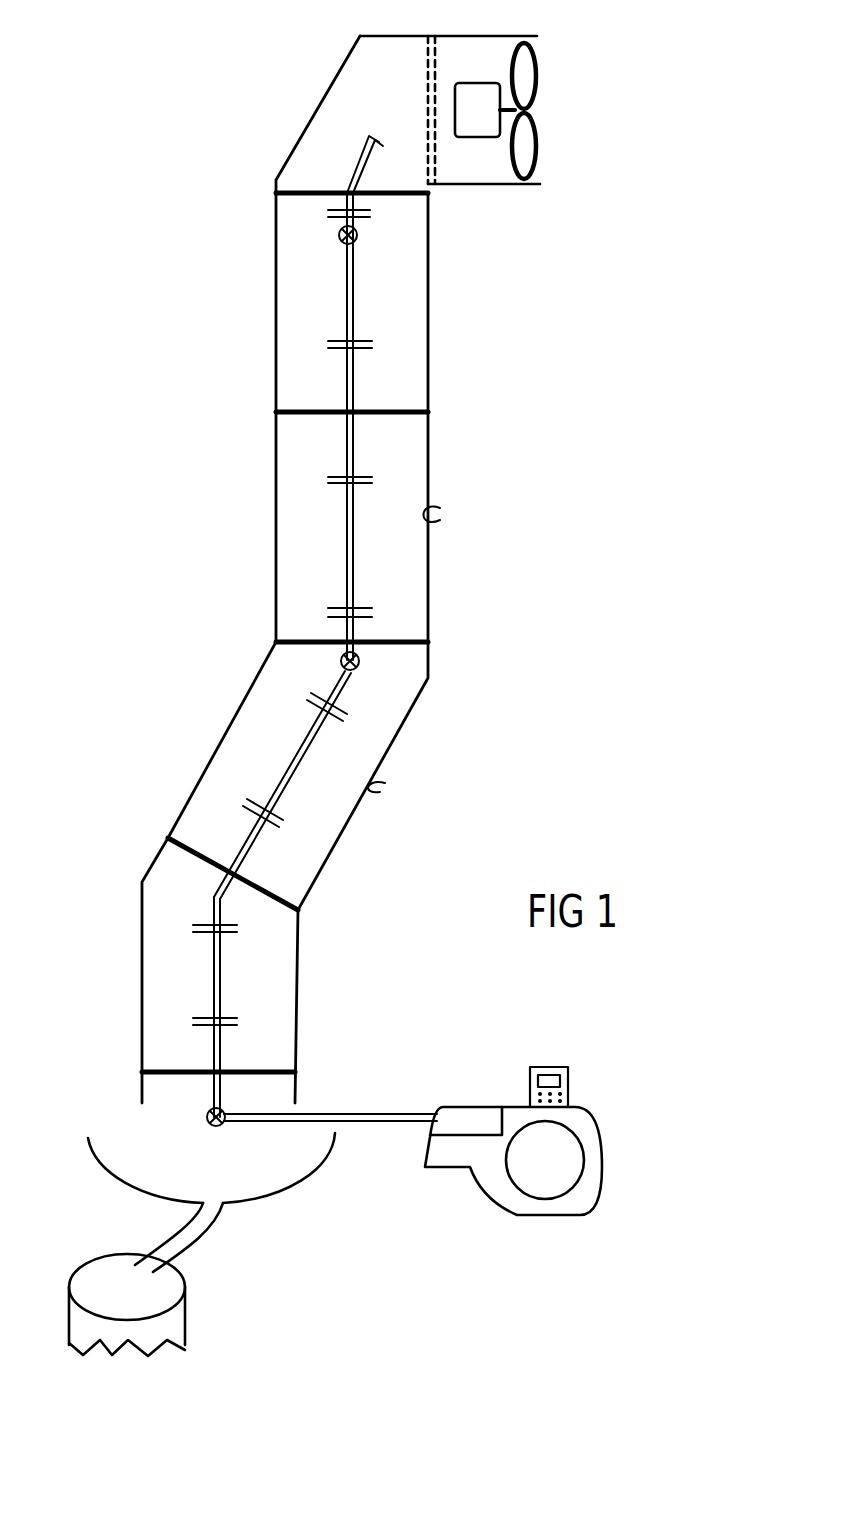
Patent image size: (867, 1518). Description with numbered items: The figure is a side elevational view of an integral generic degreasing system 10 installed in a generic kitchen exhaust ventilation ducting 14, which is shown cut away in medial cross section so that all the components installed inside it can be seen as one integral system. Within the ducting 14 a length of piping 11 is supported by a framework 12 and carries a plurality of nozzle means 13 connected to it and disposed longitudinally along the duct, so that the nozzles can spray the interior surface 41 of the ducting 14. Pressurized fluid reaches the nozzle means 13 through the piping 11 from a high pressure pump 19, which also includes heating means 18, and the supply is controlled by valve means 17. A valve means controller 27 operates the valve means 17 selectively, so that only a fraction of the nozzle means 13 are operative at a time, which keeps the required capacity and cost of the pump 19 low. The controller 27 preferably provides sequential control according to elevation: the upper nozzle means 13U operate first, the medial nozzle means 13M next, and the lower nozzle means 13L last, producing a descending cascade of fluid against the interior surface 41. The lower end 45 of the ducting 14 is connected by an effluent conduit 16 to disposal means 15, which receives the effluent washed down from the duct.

The integral generic degreasing system 10 is at (570, 1333).
The piping 11 is at (348, 553).
The framework 12 is at (419, 197).
The nozzle means 13 is at (322, 346).
The upper nozzle means 13U is at (355, 143).
The medial nozzle means 13M is at (322, 481).
The lower nozzle means 13L is at (180, 1018).
The kitchen exhaust ventilation ducting 14 is at (430, 322).
The disposal means 15 is at (93, 1275).
The effluent conduit 16 is at (200, 1228).
The valve means 17 is at (338, 234).
The heating means 18 is at (478, 1113).
The high pressure pump 19 is at (493, 1195).
The valve means controller 27 is at (570, 1078).
The interior surface 41 is at (421, 651).
The lower end 45 is at (170, 1110).